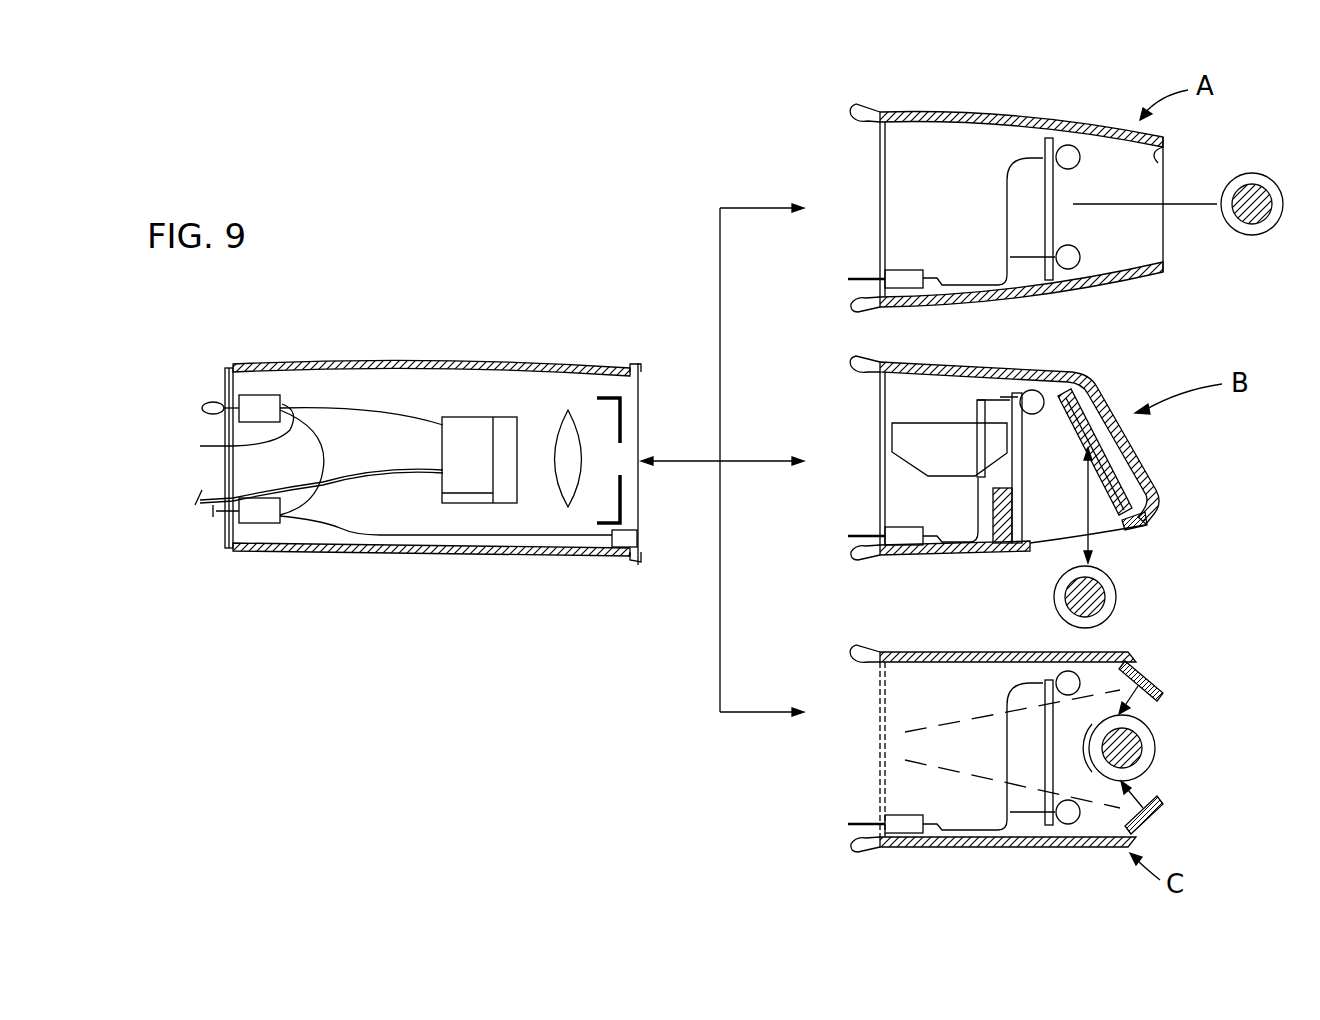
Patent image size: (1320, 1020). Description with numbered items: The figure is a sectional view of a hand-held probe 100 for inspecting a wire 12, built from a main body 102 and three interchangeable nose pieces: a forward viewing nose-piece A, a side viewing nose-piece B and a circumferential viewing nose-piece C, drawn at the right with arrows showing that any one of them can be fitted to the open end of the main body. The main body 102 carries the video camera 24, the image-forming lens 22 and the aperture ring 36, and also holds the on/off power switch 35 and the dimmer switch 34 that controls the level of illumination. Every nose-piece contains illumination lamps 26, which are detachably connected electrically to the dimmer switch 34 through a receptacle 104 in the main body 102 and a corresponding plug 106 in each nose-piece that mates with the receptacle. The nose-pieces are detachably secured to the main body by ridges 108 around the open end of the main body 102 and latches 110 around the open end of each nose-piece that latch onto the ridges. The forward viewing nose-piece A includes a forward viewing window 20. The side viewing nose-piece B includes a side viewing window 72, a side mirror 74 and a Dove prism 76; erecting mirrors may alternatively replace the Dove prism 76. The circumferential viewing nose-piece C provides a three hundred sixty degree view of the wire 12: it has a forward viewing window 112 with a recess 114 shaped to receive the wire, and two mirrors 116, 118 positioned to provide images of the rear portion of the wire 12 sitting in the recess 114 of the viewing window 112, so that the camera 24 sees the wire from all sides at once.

The wire 12 is at (1262, 234).
The forward viewing window 20 is at (1163, 157).
The image-forming lens 22 is at (565, 430).
The video camera 24 is at (503, 425).
The illumination lamps 26 is at (1063, 146).
The dimmer switch 34 is at (262, 512).
The on/off power switch 35 is at (265, 405).
The aperture ring 36 is at (608, 396).
The side viewing window 72 is at (1120, 523).
The side mirror 74 is at (1130, 486).
The Dove prism 76 is at (943, 437).
The hand-held probe 100 is at (451, 482).
The main body 102 is at (498, 550).
The receptacle 104 is at (618, 548).
The plug 106 is at (890, 272).
The ridges 108 is at (640, 368).
The latches 110 is at (866, 100).
The forward viewing window 112 is at (1140, 665).
The recess 114 is at (1150, 712).
The mirror 116 is at (1163, 692).
The mirror 118 is at (1162, 808).